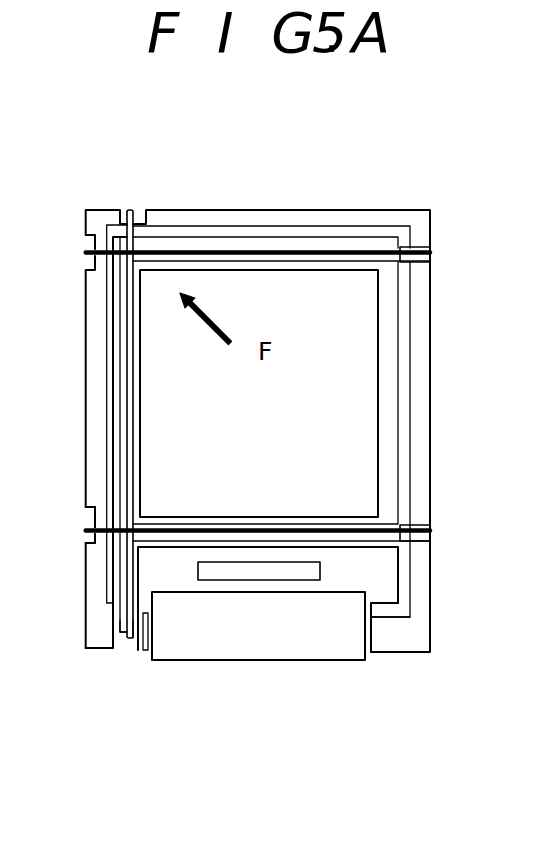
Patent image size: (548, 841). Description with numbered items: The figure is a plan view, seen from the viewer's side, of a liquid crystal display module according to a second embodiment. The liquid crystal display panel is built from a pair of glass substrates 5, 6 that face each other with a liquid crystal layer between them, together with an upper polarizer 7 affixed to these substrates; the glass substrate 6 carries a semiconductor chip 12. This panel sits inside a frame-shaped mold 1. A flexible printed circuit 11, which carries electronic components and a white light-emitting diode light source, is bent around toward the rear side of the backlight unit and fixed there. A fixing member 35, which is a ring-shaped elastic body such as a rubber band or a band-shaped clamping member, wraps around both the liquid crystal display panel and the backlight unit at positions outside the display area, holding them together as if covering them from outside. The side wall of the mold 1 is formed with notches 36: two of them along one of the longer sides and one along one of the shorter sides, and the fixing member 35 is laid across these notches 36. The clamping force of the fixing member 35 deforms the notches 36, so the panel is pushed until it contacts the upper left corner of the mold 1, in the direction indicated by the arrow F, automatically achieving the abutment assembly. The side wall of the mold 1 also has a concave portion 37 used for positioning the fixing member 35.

The mold 1 is at (418, 338).
The glass substrate 5 is at (390, 405).
The glass substrate 6 is at (383, 593).
The upper polarizer 7 is at (353, 327).
The flexible printed circuit 11 is at (188, 655).
The semiconductor chip 12 is at (322, 573).
The fixing member 35 is at (218, 520).
The notch 36 is at (420, 248).
The concave portion 37 is at (85, 536).